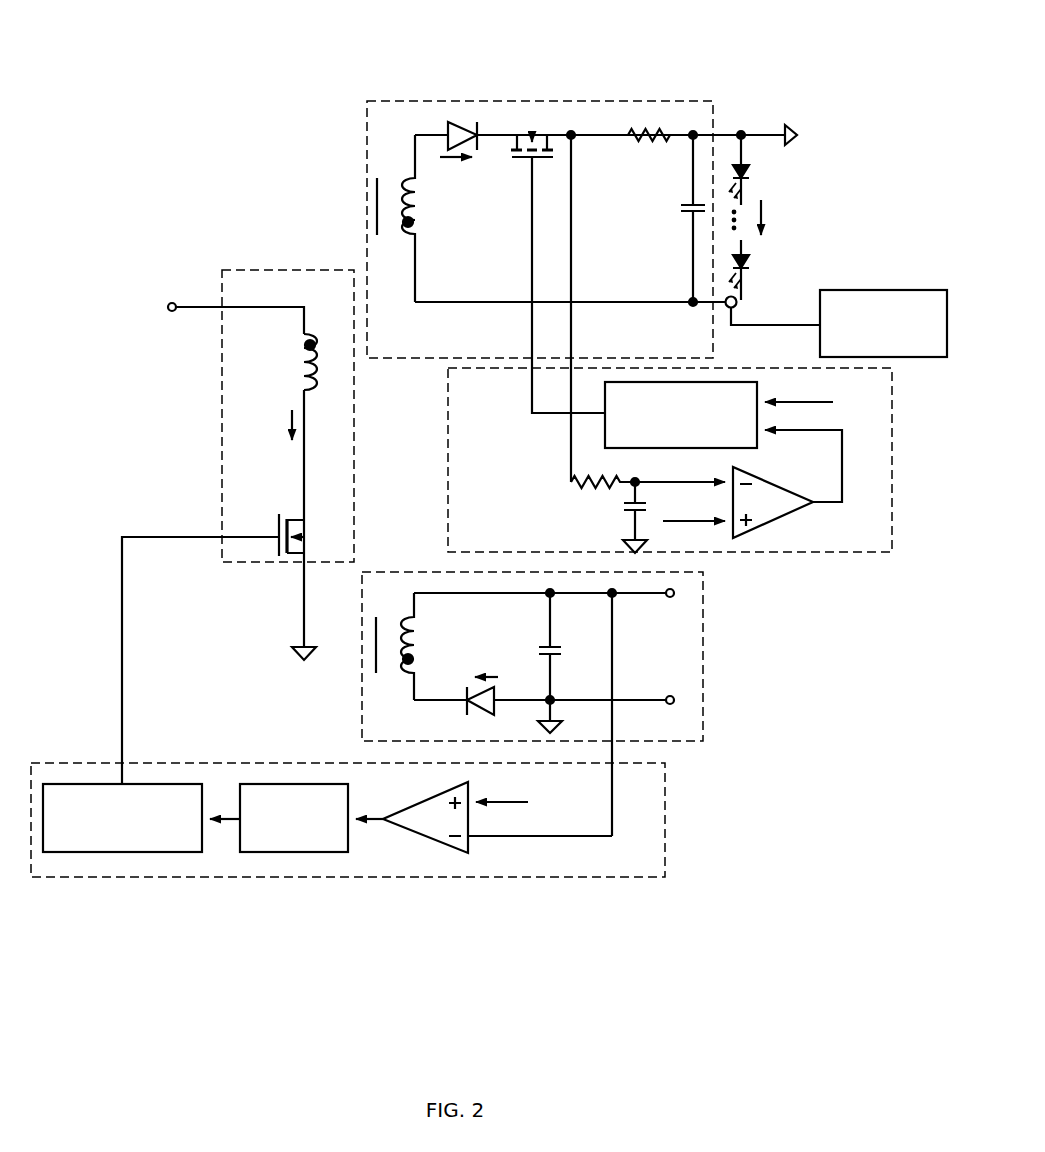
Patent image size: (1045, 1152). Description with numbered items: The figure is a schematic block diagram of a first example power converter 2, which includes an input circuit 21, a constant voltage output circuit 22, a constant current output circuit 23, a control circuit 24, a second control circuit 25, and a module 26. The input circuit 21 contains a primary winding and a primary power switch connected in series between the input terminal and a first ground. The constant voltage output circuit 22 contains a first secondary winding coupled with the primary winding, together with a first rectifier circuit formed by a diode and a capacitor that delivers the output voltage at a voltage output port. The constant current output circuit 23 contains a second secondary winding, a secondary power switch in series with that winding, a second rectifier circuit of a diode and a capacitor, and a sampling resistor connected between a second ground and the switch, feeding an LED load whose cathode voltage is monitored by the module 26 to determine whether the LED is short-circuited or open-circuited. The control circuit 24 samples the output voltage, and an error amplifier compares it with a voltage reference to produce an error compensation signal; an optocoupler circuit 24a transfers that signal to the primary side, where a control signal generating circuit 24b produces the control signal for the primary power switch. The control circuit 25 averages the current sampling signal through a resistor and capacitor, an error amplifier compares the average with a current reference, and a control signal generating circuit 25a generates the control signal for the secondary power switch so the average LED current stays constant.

The power converter 2 is at (286, 150).
The input circuit 21 is at (248, 270).
The constant voltage output circuit 22 is at (703, 678).
The constant current output circuit 23 is at (628, 101).
The control circuit 24 is at (665, 851).
The optocoupler circuit 24a is at (294, 818).
The control signal generating circuit 24b is at (122, 818).
The control circuit 25 is at (822, 553).
The control signal generating circuit 25a is at (681, 415).
The module 26 is at (840, 290).